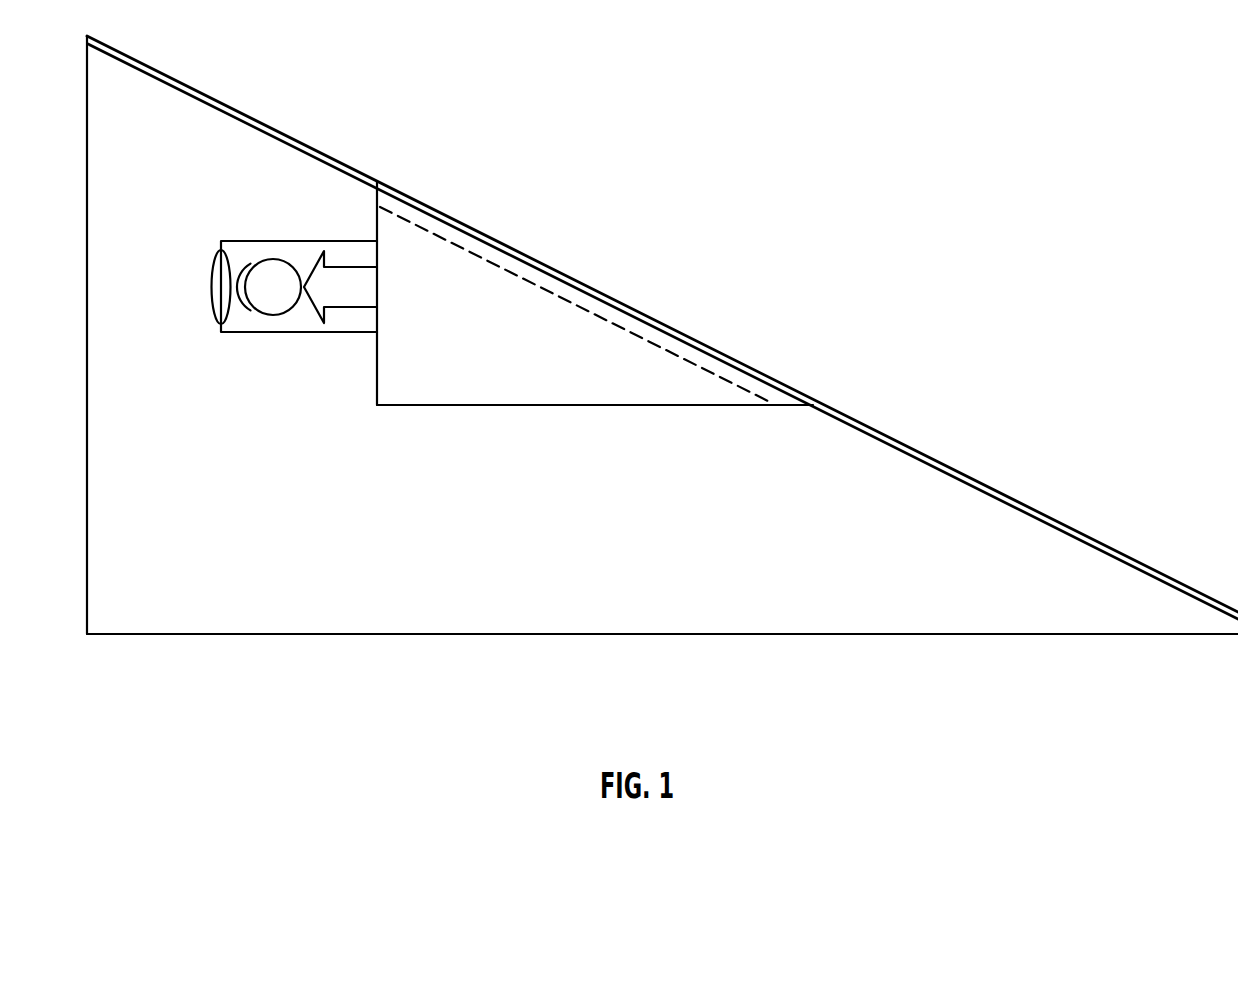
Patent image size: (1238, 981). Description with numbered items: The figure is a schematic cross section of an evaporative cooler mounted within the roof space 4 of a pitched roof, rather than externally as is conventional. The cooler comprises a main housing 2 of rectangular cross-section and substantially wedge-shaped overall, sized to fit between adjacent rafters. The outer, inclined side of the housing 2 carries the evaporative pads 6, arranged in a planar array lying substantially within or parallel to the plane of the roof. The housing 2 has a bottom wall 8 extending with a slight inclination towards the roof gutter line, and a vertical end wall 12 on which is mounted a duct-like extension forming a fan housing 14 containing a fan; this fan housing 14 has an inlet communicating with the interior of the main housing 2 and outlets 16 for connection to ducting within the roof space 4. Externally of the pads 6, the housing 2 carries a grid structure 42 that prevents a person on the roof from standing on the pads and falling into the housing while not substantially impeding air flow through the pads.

The main housing 2 is at (462, 365).
The roof space 4 is at (306, 615).
The evaporative pads 6 is at (688, 359).
The bottom wall 8 is at (539, 405).
The vertical end wall 12 is at (377, 372).
The fan housing 14 is at (270, 241).
The outlets 16 is at (211, 287).
The grid structure 42 is at (577, 280).